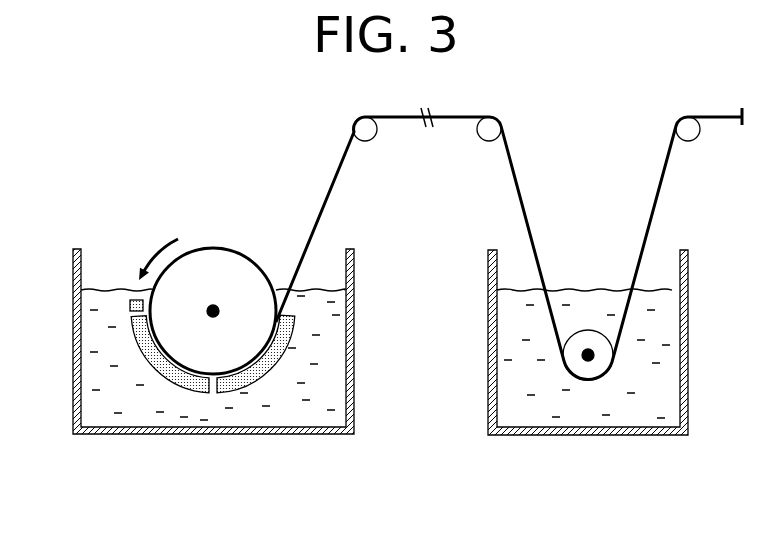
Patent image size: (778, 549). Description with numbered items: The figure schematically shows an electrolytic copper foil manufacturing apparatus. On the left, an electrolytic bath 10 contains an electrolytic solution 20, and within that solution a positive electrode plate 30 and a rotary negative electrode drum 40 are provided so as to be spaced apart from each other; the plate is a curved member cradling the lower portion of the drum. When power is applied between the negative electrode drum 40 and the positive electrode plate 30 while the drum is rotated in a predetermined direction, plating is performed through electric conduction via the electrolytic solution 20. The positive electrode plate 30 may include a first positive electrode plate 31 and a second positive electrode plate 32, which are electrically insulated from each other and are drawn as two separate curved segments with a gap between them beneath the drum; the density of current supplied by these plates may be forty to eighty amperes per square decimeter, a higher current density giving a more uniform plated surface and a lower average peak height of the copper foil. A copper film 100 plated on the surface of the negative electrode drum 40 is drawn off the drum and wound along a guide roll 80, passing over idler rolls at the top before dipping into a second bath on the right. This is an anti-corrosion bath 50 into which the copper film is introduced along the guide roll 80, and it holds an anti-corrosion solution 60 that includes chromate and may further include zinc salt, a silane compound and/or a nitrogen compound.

The electrolytic bath 10 is at (76, 358).
The electrolytic solution 20 is at (323, 383).
The positive electrode plate 30 is at (212, 411).
The first positive electrode plate 31 is at (188, 389).
The second positive electrode plate 32 is at (250, 387).
The rotary negative electrode drum 40 is at (225, 248).
The anti-corrosion bath 50 is at (488, 355).
The anti-corrosion solution 60 is at (672, 342).
The guide roll 80 is at (590, 372).
The copper film 100 is at (337, 165).